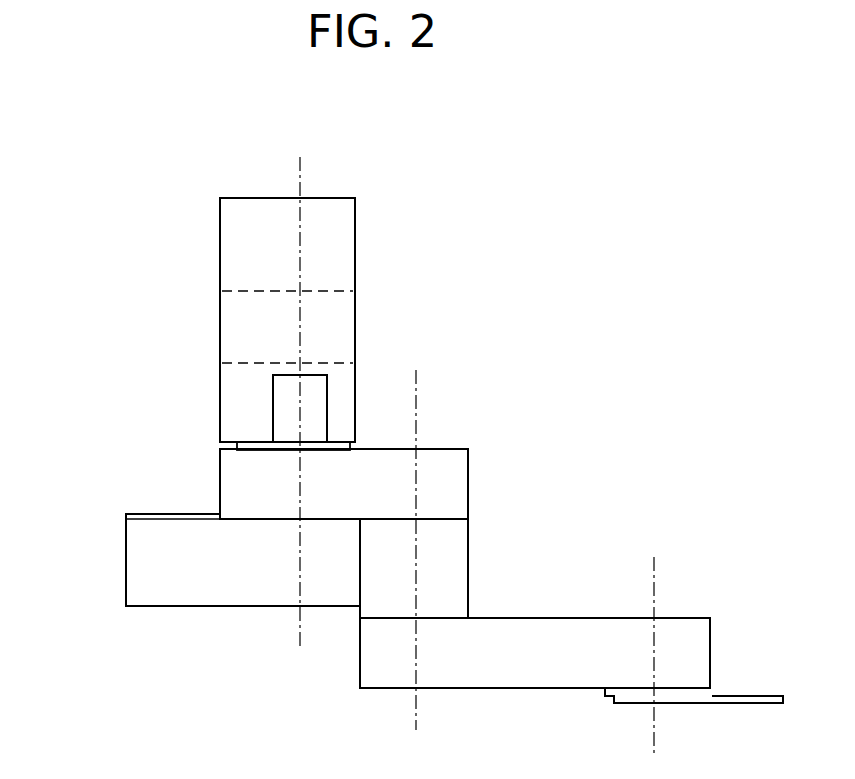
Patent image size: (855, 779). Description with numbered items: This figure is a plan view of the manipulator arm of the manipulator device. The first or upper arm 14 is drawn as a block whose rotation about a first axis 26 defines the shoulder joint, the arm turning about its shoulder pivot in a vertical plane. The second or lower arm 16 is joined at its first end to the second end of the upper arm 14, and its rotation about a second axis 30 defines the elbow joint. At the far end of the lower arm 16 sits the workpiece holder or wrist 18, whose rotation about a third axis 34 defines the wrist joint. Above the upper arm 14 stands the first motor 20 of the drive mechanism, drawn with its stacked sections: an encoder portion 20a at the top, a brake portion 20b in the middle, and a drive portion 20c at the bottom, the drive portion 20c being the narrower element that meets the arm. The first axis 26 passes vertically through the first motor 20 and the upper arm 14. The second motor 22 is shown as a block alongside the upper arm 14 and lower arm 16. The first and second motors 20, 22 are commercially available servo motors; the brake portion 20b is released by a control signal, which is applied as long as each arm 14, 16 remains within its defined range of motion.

The upper arm 14 is at (232, 476).
The lower arm 16 is at (503, 630).
The wrist 18 is at (712, 691).
The first motor 20 is at (220, 300).
The encoder portion 20a is at (250, 245).
The brake portion 20b is at (247, 325).
The drive portion 20c is at (243, 405).
The second motor 22 is at (151, 569).
The first axis 26 is at (300, 157).
The second axis 30 is at (416, 384).
The third axis 34 is at (654, 568).